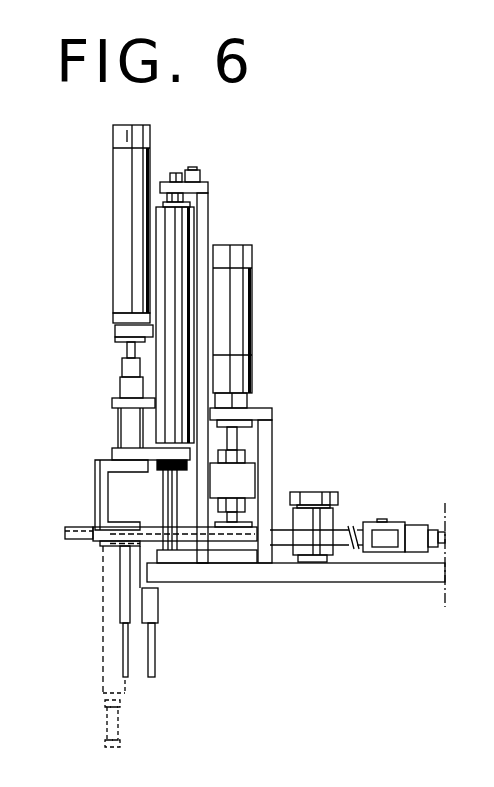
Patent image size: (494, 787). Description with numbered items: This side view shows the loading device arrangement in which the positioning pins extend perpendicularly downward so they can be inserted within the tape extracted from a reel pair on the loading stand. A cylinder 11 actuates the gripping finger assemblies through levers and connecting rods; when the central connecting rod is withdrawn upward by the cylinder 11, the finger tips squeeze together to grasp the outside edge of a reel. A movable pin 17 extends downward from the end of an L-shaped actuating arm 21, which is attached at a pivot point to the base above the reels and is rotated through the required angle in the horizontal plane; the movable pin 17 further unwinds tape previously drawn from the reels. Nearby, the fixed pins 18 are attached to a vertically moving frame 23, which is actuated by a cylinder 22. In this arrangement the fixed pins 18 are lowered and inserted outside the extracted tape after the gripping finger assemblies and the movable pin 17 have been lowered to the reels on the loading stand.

The cylinder 11 is at (253, 300).
The movable positioning pin 17 is at (118, 725).
The fixed positioning pin 18 is at (123, 650).
The actuating arm 21 is at (302, 536).
The cylinder 22 is at (113, 204).
The vertically moving frame 23 is at (96, 490).